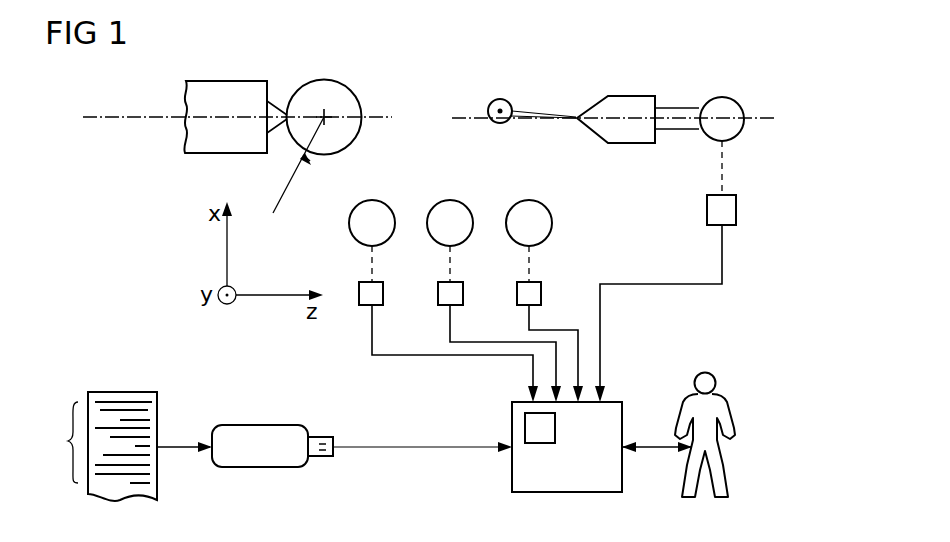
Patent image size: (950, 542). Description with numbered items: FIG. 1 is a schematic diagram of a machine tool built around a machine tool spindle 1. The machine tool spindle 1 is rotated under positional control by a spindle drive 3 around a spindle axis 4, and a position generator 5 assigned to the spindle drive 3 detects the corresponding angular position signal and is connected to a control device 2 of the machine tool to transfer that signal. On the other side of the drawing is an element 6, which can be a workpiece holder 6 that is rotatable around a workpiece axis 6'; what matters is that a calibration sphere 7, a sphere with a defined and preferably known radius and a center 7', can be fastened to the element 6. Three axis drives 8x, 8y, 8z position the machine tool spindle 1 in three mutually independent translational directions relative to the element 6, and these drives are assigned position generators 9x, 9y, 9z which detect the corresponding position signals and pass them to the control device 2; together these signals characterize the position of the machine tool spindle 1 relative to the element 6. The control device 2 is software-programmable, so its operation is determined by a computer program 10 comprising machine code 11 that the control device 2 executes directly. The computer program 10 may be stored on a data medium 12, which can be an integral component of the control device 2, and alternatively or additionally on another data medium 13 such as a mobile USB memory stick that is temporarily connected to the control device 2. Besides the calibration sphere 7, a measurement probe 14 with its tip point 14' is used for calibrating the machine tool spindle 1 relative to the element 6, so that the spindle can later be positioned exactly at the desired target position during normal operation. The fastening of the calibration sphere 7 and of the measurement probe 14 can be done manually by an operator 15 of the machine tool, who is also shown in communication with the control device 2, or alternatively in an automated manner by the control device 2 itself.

The machine tool spindle 1 is at (633, 96).
The control device 2 is at (512, 429).
The spindle drive 3 is at (722, 97).
The spindle axis 4 is at (463, 118).
The position generator 5 is at (707, 211).
The element 6 is at (235, 88).
The workpiece axis 6' is at (237, 147).
The calibration sphere 7 is at (317, 118).
The center of rotation 7' is at (349, 94).
The axis drive 8x is at (372, 200).
The axis drive 8y is at (450, 200).
The axis drive 8z is at (529, 200).
The position generator 9x is at (383, 283).
The position generator 9y is at (463, 283).
The position generator 9z is at (541, 283).
The computer program 10 is at (127, 418).
The machine code 11 is at (97, 442).
The data medium 12 is at (555, 428).
The other data medium 13 is at (258, 425).
The measurement probe 14 is at (528, 83).
The target center 14' is at (530, 96).
The operator 15 is at (705, 373).